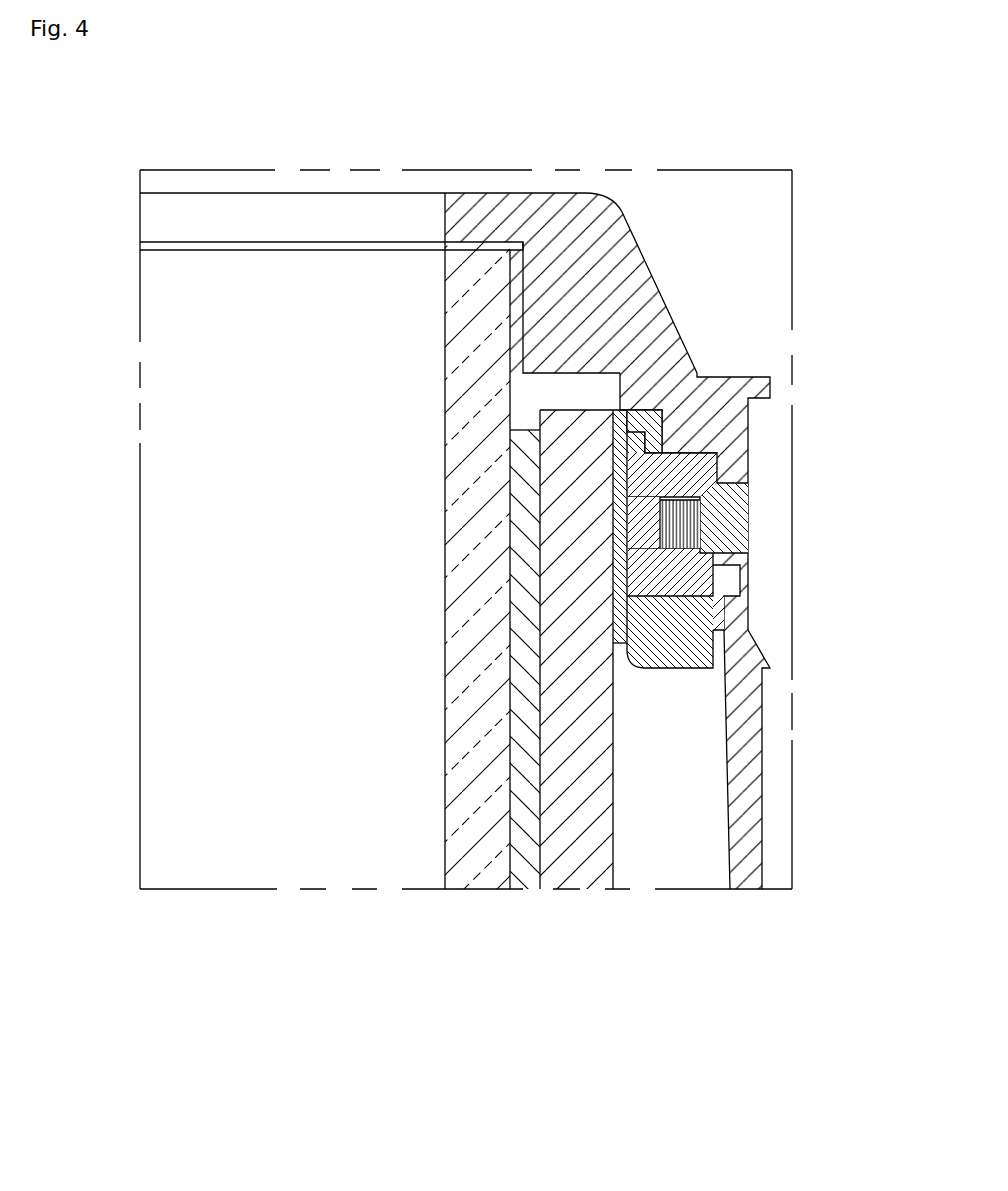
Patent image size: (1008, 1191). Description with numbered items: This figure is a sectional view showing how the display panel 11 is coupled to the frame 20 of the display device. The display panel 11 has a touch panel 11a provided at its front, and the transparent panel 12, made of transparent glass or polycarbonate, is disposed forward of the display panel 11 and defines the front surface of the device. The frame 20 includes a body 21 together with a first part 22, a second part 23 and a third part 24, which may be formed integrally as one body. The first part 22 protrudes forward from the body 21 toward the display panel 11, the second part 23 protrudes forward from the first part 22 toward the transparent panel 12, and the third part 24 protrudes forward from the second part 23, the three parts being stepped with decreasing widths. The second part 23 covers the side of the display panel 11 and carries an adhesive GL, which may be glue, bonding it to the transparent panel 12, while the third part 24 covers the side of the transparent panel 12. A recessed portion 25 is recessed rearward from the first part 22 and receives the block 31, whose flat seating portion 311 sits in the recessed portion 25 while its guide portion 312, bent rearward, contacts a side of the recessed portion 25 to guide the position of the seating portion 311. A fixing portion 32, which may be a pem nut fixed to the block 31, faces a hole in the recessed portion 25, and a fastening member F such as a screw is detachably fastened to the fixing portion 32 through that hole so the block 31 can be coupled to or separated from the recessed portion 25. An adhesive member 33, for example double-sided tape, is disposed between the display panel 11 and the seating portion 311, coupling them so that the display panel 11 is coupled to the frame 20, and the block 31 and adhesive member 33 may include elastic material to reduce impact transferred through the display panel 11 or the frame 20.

The display panel 11 is at (592, 877).
The touch panel 11a is at (525, 877).
The transparent panel 12 is at (331, 472).
The adhesive GL is at (547, 330).
The frame 20 is at (498, 545).
The body 21 is at (764, 748).
The first part 22 is at (670, 425).
The second part 23 is at (545, 302).
The third part 24 is at (470, 226).
The recessed portion 25 is at (660, 440).
The block 31 is at (755, 565).
The seating portion 311 is at (680, 668).
The guide portion 312 is at (697, 640).
The fixing portion 32 is at (708, 550).
The adhesive member 33 is at (638, 397).
The fastening member F is at (710, 554).